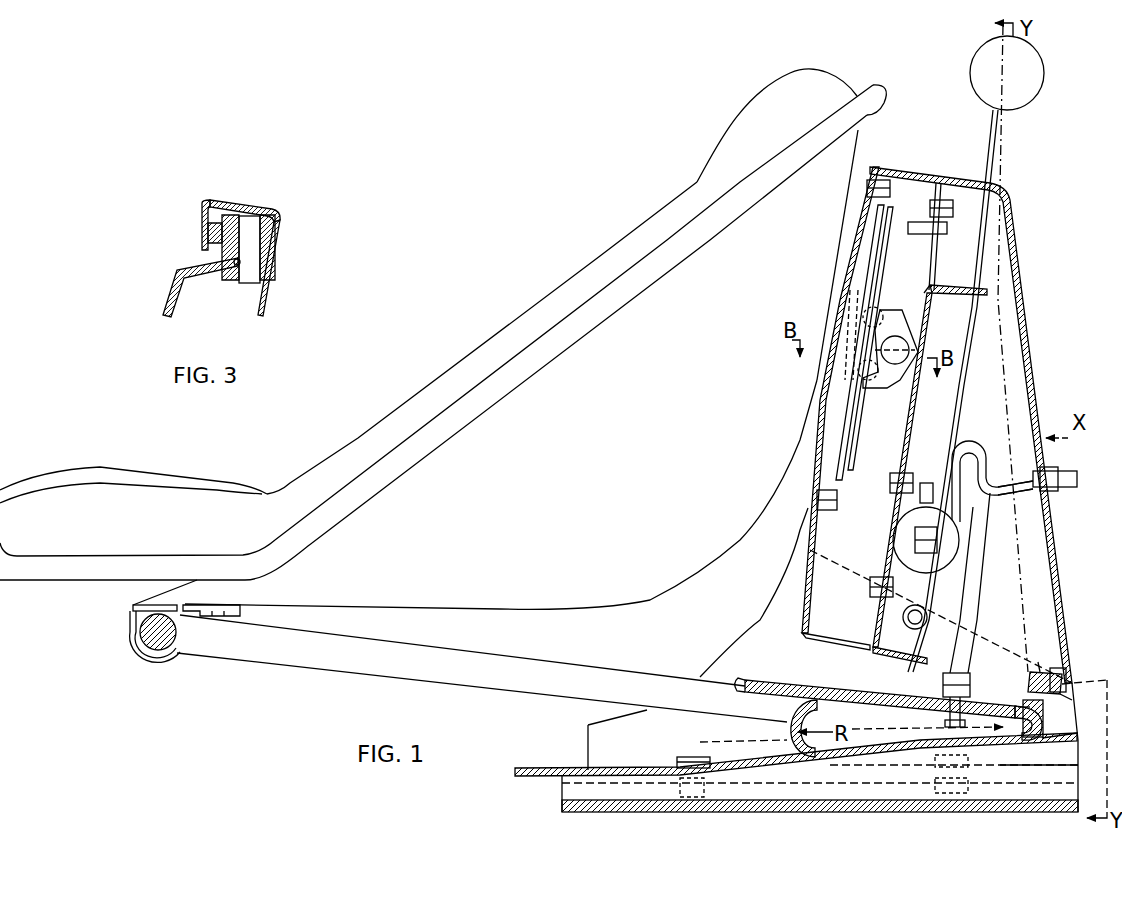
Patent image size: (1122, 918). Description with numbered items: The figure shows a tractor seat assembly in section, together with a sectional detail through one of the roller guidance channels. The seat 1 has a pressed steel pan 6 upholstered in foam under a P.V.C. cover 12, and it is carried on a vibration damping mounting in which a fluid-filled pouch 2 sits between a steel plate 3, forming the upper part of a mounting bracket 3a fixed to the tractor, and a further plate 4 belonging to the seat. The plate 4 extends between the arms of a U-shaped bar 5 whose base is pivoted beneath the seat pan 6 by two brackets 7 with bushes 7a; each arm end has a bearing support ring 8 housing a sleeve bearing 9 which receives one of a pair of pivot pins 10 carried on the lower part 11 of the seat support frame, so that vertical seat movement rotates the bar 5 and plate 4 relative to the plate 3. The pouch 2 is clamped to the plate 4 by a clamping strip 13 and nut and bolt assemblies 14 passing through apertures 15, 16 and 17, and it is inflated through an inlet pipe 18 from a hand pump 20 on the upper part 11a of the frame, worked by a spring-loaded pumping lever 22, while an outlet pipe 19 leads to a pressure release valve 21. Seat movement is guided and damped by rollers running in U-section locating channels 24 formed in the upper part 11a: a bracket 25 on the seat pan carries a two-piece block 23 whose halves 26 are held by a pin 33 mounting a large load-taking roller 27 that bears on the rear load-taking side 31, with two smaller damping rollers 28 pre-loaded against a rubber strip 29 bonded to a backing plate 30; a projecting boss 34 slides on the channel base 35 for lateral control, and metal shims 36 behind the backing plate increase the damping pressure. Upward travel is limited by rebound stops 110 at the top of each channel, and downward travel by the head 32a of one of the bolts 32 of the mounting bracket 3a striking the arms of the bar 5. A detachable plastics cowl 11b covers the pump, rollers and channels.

In FIG. 1, the seat 1 is at (640, 584).
In FIG. 1, the fluid-filled pouch 2 is at (830, 747).
In FIG. 1, the steel plate 3 is at (893, 755).
In FIG. 1, the mounting bracket 3a is at (990, 765).
In FIG. 1, the plate 4 is at (817, 690).
In FIG. 1, the U-shaped bar 5 is at (600, 675).
In FIG. 1, the seat pan 6 is at (486, 607).
In FIG. 1, the brackets 7 is at (230, 606).
In FIG. 1, the bushes 7a is at (133, 612).
In FIG. 1, the bearing support ring 8 is at (1028, 700).
In FIG. 1, the sleeve bearing 9 is at (1022, 706).
In FIG. 1, the pivot pins 10 is at (1018, 712).
In FIG. 1, the lower part of seat support frame 11 is at (1000, 638).
In FIG. 1, the upper part of seat support frame 11a is at (956, 387).
In FIG. 3, the upper part of seat support frame 11a is at (263, 318).
In FIG. 1, the detachable cowl 11b is at (1056, 566).
In FIG. 1, the P.V.C. cover 12 is at (493, 338).
In FIG. 1, the clamping strip 13 is at (1060, 684).
In FIG. 1, the nut and bolt assemblies 14 is at (1060, 697).
In FIG. 1, the apertures 15 is at (1044, 736).
In FIG. 1, the apertures 16 is at (1058, 670).
In FIG. 1, the apertures 17 is at (1040, 672).
In FIG. 1, the inlet pipe 18 is at (976, 470).
In FIG. 1, the outlet pipe 19 is at (1027, 492).
In FIG. 1, the hand pump 20 is at (925, 573).
In FIG. 1, the pressure release valve 21 is at (1057, 468).
In FIG. 1, the pumping lever 22 is at (978, 258).
In FIG. 1, the two-piece block 23 is at (899, 322).
In FIG. 1, the locating channels 24 is at (812, 550).
In FIG. 3, the locating channels 24 is at (282, 217).
In FIG. 1, the bracket 25 is at (830, 320).
In FIG. 3, the bracket 25 is at (190, 275).
In FIG. 1, the halves of block 26 is at (887, 385).
In FIG. 3, the halves of block 26 is at (277, 240).
In FIG. 1, the load-taking roller 27 is at (925, 347).
In FIG. 3, the load-taking roller 27 is at (268, 257).
In FIG. 1, the damping rollers 28 is at (880, 315).
In FIG. 3, the damping rollers 28 is at (227, 220).
In FIG. 1, the rubber strip 29 is at (877, 243).
In FIG. 3, the rubber strip 29 is at (210, 237).
In FIG. 1, the backing plate 30 is at (882, 212).
In FIG. 3, the backing plate 30 is at (210, 227).
In FIG. 1, the rear load-taking side 31 is at (915, 425).
In FIG. 3, the rear load-taking side 31 is at (277, 245).
In FIG. 1, the bolts 32 is at (700, 800).
In FIG. 1, the bolt head 32a is at (694, 757).
In FIG. 1, the pin 33 is at (882, 352).
In FIG. 3, the pin 33 is at (235, 262).
In FIG. 3, the projecting boss 34 is at (277, 212).
In FIG. 3, the base of guidance channel 35 is at (250, 213).
In FIG. 1, the metal shims 36 is at (838, 437).
In FIG. 3, the metal shims 36 is at (208, 222).
In FIG. 1, the rebound stops 110 is at (940, 228).